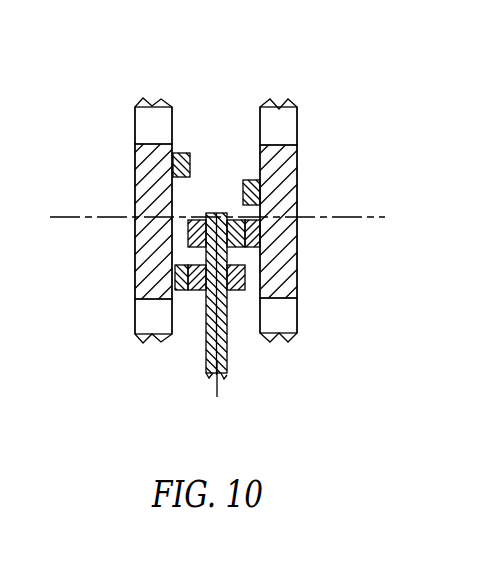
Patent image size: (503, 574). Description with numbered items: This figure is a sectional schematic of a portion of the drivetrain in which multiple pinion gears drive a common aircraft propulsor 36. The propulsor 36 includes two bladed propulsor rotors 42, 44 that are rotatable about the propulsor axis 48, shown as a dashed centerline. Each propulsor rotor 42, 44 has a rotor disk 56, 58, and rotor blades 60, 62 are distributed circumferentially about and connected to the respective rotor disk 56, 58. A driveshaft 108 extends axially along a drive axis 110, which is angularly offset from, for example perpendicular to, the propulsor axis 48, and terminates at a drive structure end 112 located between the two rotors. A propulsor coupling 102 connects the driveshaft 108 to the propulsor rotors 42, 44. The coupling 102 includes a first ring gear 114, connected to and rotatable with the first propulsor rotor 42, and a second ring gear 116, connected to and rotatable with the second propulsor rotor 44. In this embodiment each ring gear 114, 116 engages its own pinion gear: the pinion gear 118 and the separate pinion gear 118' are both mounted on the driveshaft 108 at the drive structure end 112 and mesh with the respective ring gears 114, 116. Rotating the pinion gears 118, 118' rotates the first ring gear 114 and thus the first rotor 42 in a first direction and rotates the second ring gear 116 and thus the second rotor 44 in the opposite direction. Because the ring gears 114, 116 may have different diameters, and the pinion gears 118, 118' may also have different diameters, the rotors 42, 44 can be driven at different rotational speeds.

The aircraft propulsor 36 is at (338, 75).
The propulsor rotor 42 is at (153, 98).
The propulsor rotor 44 is at (278, 97).
The axis 48 is at (385, 217).
The rotor disk 56 is at (135, 172).
The rotor disk 58 is at (297, 172).
The rotor blades 60 is at (135, 120).
The rotor blades 62 is at (297, 120).
The propulsor coupling 102 is at (192, 262).
The driveshaft 108 is at (227, 363).
The drive axis 110 is at (215, 390).
The drive structure end 112 is at (213, 213).
The ring gear 114 is at (182, 153).
The ring gear 116 is at (247, 180).
The pinion gear 118 is at (183, 323).
The pinion gear 118' is at (293, 261).